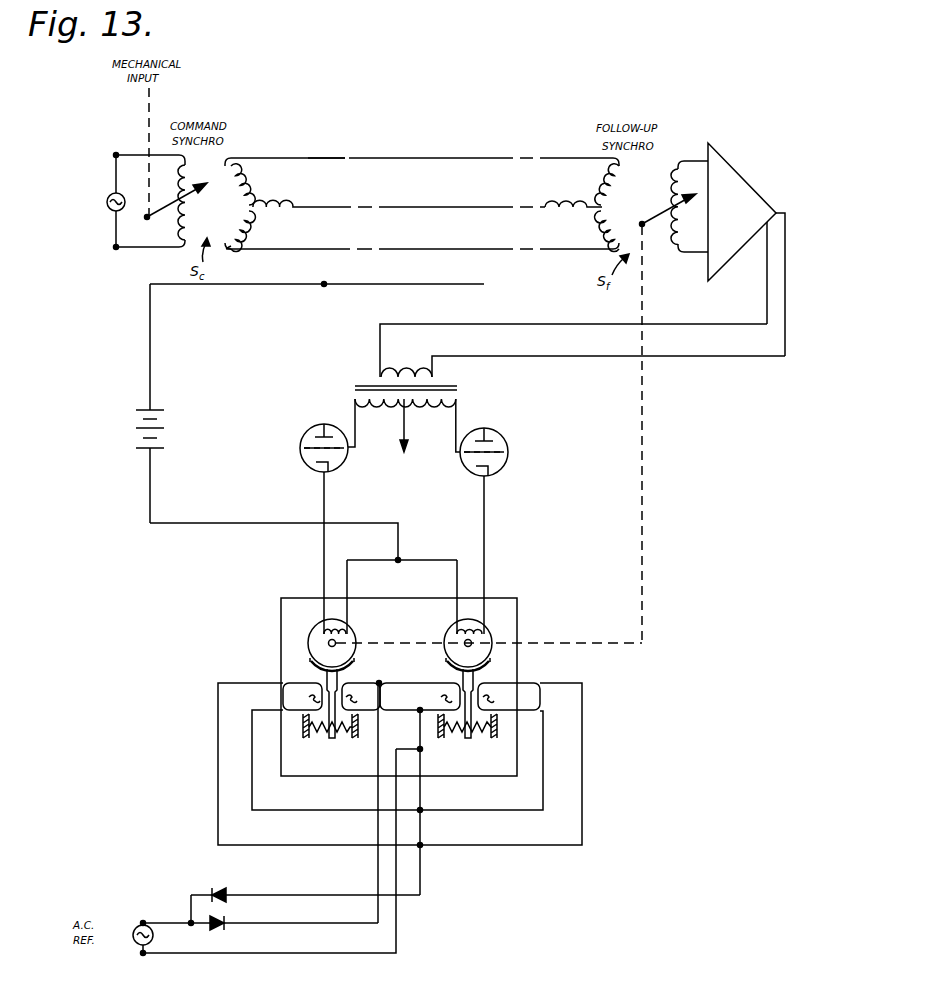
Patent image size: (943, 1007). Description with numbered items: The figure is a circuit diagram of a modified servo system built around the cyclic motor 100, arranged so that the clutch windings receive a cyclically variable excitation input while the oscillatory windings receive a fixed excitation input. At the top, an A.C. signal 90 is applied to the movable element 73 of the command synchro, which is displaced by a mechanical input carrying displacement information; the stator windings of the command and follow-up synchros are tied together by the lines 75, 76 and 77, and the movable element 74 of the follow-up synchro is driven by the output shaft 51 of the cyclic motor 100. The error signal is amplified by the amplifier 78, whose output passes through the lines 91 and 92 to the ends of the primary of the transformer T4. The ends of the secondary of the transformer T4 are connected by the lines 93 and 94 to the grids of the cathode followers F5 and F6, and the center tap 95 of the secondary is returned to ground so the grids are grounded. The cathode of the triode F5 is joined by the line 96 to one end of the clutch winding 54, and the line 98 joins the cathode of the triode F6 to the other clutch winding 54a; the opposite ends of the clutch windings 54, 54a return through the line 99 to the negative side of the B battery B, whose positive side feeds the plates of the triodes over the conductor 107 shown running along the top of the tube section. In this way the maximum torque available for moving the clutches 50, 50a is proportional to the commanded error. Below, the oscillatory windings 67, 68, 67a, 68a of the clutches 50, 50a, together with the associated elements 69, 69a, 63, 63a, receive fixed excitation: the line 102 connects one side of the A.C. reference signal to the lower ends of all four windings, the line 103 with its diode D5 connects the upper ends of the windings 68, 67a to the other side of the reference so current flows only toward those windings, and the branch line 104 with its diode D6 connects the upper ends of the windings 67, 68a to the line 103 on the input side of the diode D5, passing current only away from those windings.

The A.C. signal 90 is at (107, 203).
The movable element 73 is at (161, 201).
The line 77 is at (443, 146).
The line 76 is at (443, 206).
The line 75 is at (443, 239).
The movable element 74 is at (650, 213).
The amplifier 78 is at (740, 171).
The supply conductor 107 is at (241, 286).
The line 91 is at (563, 326).
The line 92 is at (568, 358).
The line 93 is at (356, 434).
The line 94 is at (454, 429).
The tap 95 is at (405, 428).
The line 96 is at (323, 553).
The line 98 is at (486, 540).
The line 99 is at (383, 514).
The cyclic motor 100 is at (275, 627).
The clutch 50 is at (301, 650).
The clutch 50a is at (500, 655).
The output shaft 51 is at (407, 642).
The clutch winding 54 is at (334, 619).
The clutch winding 54a is at (469, 619).
The winding 67 is at (302, 696).
The winding 68 is at (361, 696).
The winding 67a is at (420, 696).
The winding 68a is at (509, 696).
The resistance element 69 is at (313, 738).
The resistance element 69a is at (455, 742).
The slider arm 63 is at (330, 740).
The slider arm 63a is at (470, 741).
The line 102 is at (278, 955).
The line 103 is at (377, 873).
The branch line 104 is at (312, 893).
The transformer T4 is at (395, 387).
The cathode follower F5 is at (305, 428).
The cathode follower F6 is at (508, 433).
The B battery B is at (131, 403).
The diode D5 is at (220, 936).
The diode D6 is at (221, 884).